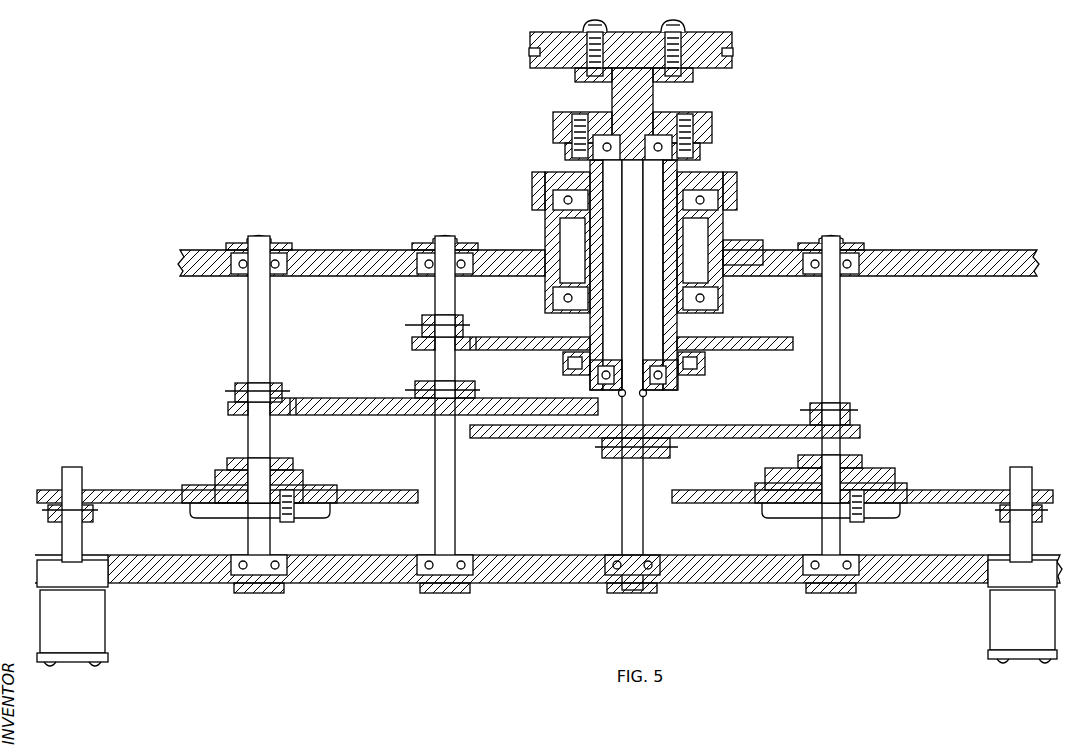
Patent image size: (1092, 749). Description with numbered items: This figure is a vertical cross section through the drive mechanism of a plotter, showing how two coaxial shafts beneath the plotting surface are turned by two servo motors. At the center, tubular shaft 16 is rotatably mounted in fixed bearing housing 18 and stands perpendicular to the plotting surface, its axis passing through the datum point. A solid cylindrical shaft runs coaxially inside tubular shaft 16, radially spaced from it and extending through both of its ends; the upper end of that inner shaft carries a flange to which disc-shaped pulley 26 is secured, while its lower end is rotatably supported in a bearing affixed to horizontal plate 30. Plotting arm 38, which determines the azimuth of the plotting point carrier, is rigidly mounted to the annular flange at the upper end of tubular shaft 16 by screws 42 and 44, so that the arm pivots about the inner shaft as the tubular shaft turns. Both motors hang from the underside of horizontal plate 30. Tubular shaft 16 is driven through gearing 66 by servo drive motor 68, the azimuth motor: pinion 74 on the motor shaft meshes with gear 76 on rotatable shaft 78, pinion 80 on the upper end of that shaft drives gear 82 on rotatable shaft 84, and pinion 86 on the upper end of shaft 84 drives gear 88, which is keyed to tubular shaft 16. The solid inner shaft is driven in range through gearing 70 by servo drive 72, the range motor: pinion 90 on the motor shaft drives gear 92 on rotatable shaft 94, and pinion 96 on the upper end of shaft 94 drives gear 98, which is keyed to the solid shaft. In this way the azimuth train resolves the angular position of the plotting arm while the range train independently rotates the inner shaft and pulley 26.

The tubular shaft 16 is at (675, 318).
The fixed bearing housing 18 is at (723, 226).
The disc-shaped pulley 26 is at (707, 36).
The horizontal plate 30 is at (333, 584).
The plotting arm 38 is at (713, 124).
The screw 42 is at (579, 113).
The screw 44 is at (692, 113).
The gearing 66 is at (322, 326).
The servo drive motor 68 is at (98, 622).
The gearing 70 is at (754, 310).
The servo drive 72 is at (995, 618).
The pinion 74 is at (83, 490).
The gear 76 is at (357, 490).
The rotatable shaft 78 is at (272, 436).
The pinion 80 is at (238, 416).
The gear 82 is at (313, 400).
The rotatable shaft 84 is at (435, 294).
The pinion 86 is at (462, 331).
The gear 88 is at (500, 351).
The pinion 90 is at (1034, 488).
The gear 92 is at (722, 504).
The rotatable shaft 94 is at (842, 363).
The pinion 96 is at (850, 422).
The gear 98 is at (702, 424).